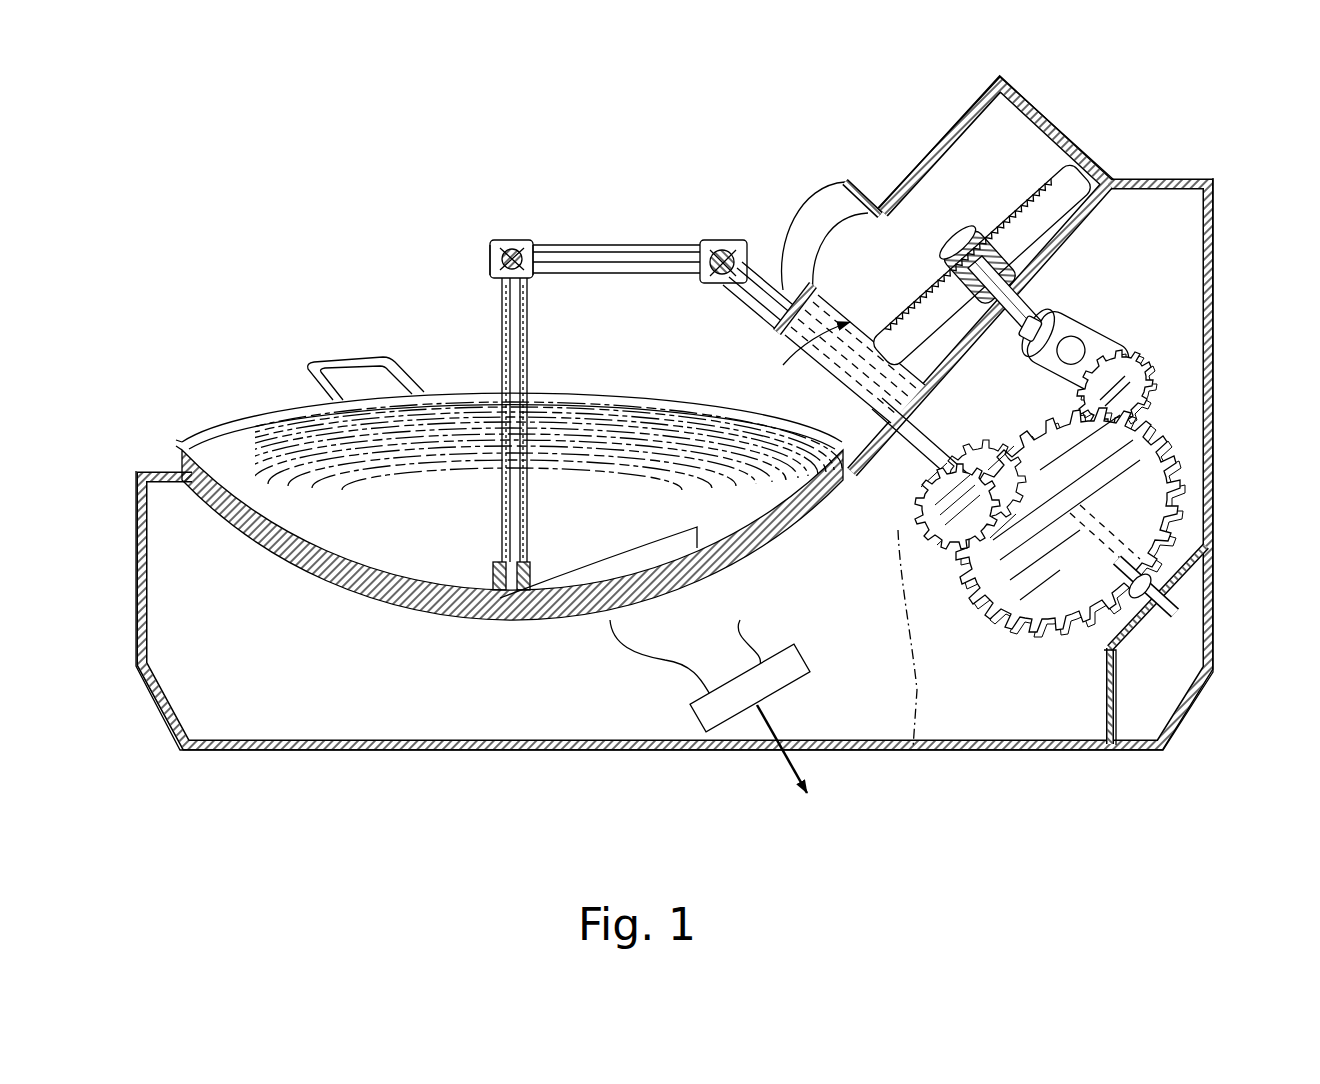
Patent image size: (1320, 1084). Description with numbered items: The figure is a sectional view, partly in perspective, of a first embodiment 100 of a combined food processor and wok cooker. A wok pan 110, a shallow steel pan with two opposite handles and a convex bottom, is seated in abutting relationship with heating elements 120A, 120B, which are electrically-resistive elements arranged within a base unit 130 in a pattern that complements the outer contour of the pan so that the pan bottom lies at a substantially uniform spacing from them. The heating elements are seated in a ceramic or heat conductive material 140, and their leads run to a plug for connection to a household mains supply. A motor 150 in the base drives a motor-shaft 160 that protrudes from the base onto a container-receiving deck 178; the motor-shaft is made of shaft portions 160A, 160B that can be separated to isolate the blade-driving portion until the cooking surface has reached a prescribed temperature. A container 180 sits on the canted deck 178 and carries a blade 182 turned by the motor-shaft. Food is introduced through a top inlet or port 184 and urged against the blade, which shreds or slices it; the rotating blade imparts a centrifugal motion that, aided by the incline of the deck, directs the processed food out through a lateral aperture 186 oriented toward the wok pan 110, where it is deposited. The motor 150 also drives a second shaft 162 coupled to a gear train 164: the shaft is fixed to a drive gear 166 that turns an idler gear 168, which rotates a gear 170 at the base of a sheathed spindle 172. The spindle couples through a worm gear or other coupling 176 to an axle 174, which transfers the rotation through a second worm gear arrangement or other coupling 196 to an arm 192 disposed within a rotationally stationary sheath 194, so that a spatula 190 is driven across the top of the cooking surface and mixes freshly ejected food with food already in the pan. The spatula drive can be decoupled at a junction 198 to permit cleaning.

The first embodiment 100 is at (278, 205).
The wok pan 110 is at (228, 500).
The heating element 120A is at (253, 560).
The heating element 120B is at (400, 580).
The base unit 130 is at (583, 697).
The ceramic or heat conductive material 140 is at (505, 600).
The motor 150 is at (1045, 370).
The motor-shaft 160 is at (1043, 290).
The shaft portion 160A is at (1023, 300).
The shaft portion 160B is at (1020, 287).
The second shaft 162 is at (1140, 360).
The gear train 164 is at (960, 445).
The drive gear 166 is at (1145, 395).
The idler gear 168 is at (1180, 480).
The gear 170 is at (913, 748).
The sheathed spindle 172 is at (880, 420).
The axle 174 is at (672, 250).
The worm gear or other coupling 176 is at (722, 264).
The container-receiving deck 178 is at (1165, 180).
The container 180 is at (950, 158).
The blade 182 is at (1075, 177).
The top inlet or port 184 is at (814, 218).
The lateral aperture 186 is at (800, 355).
The spatula 190 is at (573, 572).
The arm 192 is at (500, 358).
The rotationally stationary sheath 194 is at (490, 297).
The second worm gear arrangement or other coupling 196 is at (514, 262).
The junction 198 is at (540, 240).